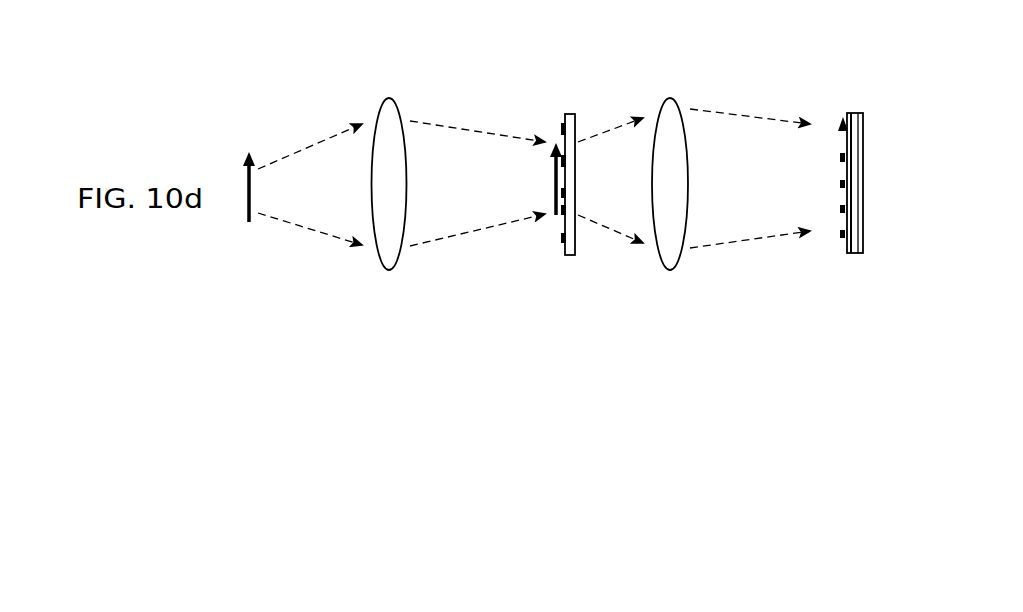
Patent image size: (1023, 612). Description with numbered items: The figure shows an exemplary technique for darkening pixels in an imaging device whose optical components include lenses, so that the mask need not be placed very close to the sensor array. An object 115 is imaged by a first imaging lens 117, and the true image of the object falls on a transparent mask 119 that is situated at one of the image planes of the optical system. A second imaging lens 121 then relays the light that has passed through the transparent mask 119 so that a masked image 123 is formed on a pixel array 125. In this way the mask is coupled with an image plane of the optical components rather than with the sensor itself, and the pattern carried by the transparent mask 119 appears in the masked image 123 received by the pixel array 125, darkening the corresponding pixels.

The object 115 is at (244, 215).
The first imaging lens 117 is at (375, 272).
The transparent mask 119 is at (554, 226).
The second imaging lens 121 is at (656, 99).
The masked image 123 is at (829, 146).
The pixel array 125 is at (855, 260).